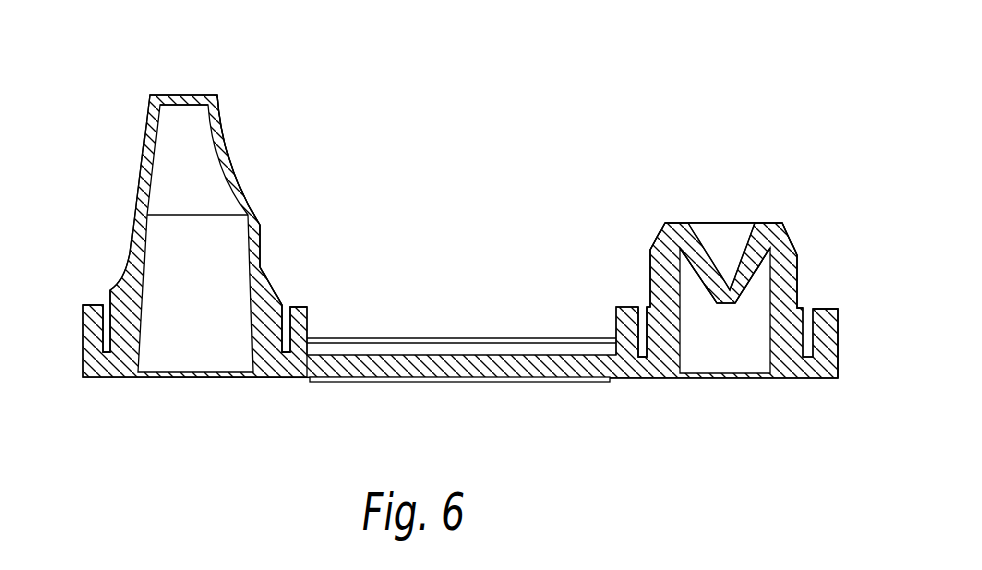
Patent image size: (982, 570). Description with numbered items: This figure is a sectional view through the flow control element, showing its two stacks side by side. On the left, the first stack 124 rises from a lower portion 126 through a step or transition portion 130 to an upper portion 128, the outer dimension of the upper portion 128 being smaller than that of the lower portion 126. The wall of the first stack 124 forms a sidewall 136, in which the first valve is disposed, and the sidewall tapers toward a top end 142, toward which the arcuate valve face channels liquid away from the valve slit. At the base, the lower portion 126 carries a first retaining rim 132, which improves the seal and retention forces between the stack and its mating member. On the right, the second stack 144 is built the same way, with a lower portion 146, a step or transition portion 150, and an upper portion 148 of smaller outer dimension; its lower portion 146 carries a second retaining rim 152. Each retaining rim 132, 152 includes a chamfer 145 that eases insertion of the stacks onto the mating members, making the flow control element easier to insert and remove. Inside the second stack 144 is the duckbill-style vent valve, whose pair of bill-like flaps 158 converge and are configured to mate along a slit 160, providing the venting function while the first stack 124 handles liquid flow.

The first stack 124 is at (190, 62).
The top end 142 is at (172, 106).
The sidewall 136 is at (223, 152).
The upper portion 128 is at (263, 237).
The step or transition portion 130 is at (270, 283).
The lower portion 126 is at (282, 303).
The chamfer 145 is at (290, 307).
The first retaining rim 132 is at (105, 308).
The second stack 144 is at (793, 210).
The second retaining rim 152 is at (650, 308).
The slit 160 is at (730, 289).
The bill-like flaps 158 is at (698, 280).
The upper portion 148 is at (800, 250).
The step or transition portion 150 is at (797, 303).
The lower portion 146 is at (815, 309).